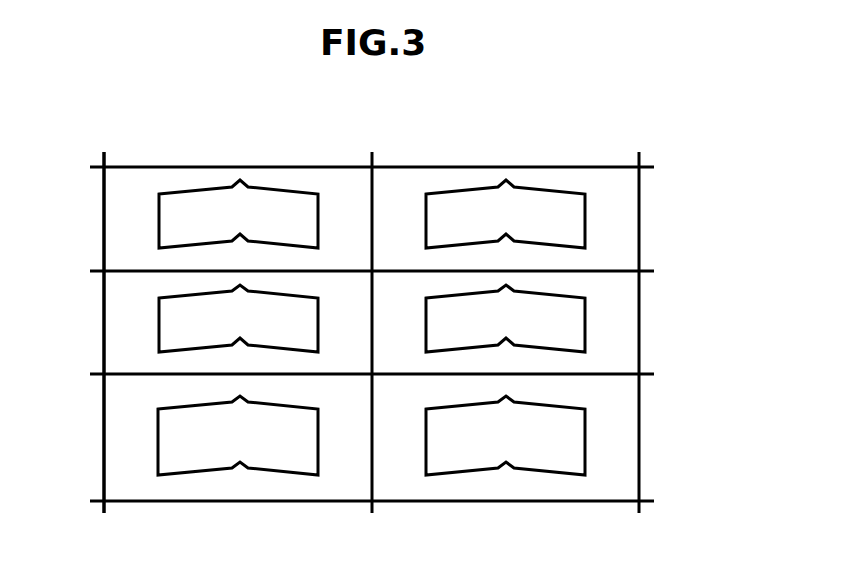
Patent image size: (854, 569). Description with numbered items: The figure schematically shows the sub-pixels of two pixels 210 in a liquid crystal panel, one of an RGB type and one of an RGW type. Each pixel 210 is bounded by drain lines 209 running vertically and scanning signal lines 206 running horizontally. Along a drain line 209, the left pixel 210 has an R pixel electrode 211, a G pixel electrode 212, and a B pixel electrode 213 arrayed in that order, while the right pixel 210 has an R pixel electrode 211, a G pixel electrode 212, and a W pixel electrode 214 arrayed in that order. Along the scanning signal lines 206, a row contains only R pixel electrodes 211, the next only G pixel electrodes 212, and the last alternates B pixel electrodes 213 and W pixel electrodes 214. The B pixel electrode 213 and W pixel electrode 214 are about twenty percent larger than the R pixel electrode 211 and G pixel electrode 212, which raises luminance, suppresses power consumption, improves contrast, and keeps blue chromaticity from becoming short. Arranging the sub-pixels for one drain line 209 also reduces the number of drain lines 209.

The scanning signal line 206 is at (595, 165).
The drain line 209 is at (103, 228).
The pixel 210 is at (212, 123).
The R pixel electrode 211 is at (296, 202).
The G pixel electrode 212 is at (167, 328).
The B pixel electrode 213 is at (167, 446).
The W pixel electrode 214 is at (575, 448).